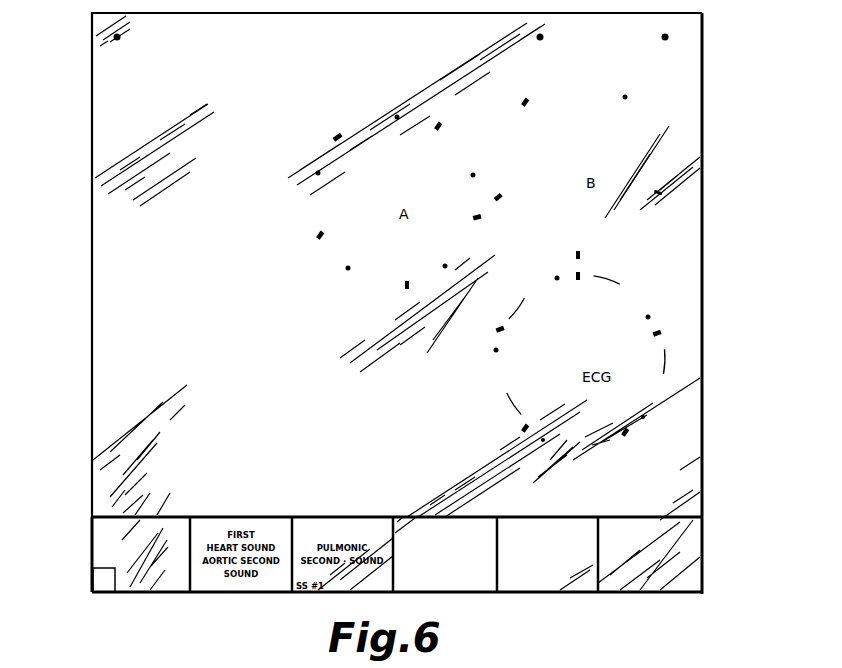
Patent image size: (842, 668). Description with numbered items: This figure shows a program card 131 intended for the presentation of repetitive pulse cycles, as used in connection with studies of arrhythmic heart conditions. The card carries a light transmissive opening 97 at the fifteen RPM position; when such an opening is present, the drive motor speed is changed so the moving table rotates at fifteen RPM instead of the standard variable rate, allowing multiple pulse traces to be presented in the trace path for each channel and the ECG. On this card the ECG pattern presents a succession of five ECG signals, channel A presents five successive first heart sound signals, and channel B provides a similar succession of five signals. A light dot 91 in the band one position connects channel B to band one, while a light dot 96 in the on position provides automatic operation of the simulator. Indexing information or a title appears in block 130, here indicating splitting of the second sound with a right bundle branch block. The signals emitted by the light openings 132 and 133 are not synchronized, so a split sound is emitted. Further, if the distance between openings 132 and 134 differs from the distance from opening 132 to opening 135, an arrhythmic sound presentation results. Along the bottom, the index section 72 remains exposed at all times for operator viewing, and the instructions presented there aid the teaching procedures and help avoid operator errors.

The index section 72 is at (708, 520).
The light dot 91 is at (117, 37).
The light dot 96 is at (665, 37).
The light transmissive opening 97 is at (540, 37).
The block 130 is at (110, 539).
The program card 131 is at (677, 248).
The light opening 132 is at (405, 285).
The light opening 133 is at (580, 255).
The light opening 134 is at (480, 219).
The light opening 135 is at (320, 235).